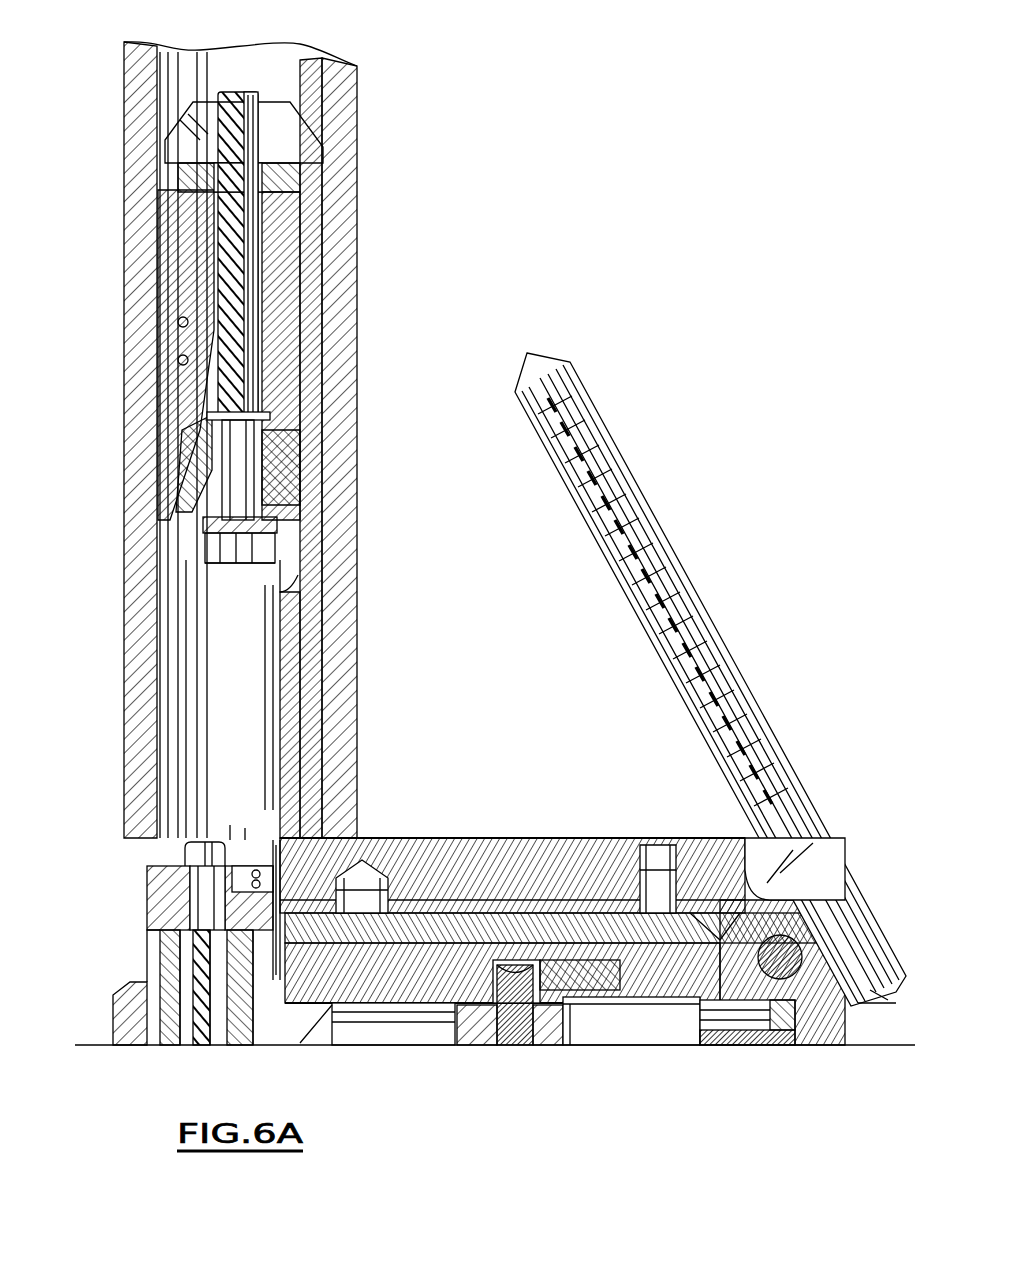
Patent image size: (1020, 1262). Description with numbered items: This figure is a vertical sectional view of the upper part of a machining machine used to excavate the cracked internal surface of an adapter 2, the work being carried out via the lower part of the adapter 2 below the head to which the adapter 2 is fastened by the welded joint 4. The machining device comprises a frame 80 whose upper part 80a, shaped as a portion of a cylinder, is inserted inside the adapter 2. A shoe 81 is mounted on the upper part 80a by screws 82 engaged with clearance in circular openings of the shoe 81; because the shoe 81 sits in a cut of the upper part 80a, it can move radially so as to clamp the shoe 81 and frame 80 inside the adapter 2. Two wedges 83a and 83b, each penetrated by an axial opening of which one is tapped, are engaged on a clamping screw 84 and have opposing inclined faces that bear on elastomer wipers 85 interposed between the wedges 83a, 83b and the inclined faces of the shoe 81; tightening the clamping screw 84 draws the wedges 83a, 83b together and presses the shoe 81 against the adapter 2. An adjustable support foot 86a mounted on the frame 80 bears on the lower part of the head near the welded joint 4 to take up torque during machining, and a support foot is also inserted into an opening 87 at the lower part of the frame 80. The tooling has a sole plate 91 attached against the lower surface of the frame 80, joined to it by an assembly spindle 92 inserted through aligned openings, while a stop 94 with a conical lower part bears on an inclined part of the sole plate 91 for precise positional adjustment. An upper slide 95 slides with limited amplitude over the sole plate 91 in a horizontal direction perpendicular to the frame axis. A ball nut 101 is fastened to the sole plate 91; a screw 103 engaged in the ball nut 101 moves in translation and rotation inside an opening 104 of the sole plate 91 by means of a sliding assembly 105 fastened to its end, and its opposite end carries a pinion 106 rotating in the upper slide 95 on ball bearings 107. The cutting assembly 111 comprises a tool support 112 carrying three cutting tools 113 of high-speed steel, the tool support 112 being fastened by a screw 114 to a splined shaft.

The adapter 2 is at (340, 640).
The welded joint 4 is at (519, 299).
The frame 80 is at (305, 722).
The upper part of the frame 80a is at (300, 276).
The shoe 81 is at (160, 233).
The screws 82 is at (183, 360).
The wedge 83a is at (318, 466).
The wedge 83b is at (325, 180).
The clamping screw 84 is at (234, 510).
The elastomer wipers 85 is at (185, 480).
The adjustable support foot 86a is at (706, 650).
The opening 87 is at (383, 860).
The sole plate 91 is at (495, 885).
The assembly spindle 92 is at (815, 898).
The stop 94 is at (648, 862).
The upper slide 95 is at (360, 1005).
The ball nut 101 is at (600, 1030).
The screw 103 is at (728, 1046).
The opening of the sole plate 104 is at (846, 936).
The sliding assembly 105 is at (810, 1048).
The pinion 106 is at (520, 1040).
The ball bearings 107 is at (478, 1048).
The cutting assembly 111 is at (140, 960).
The tool support 112 is at (150, 884).
The cutting tool 113 is at (250, 838).
The screw 114 is at (197, 853).